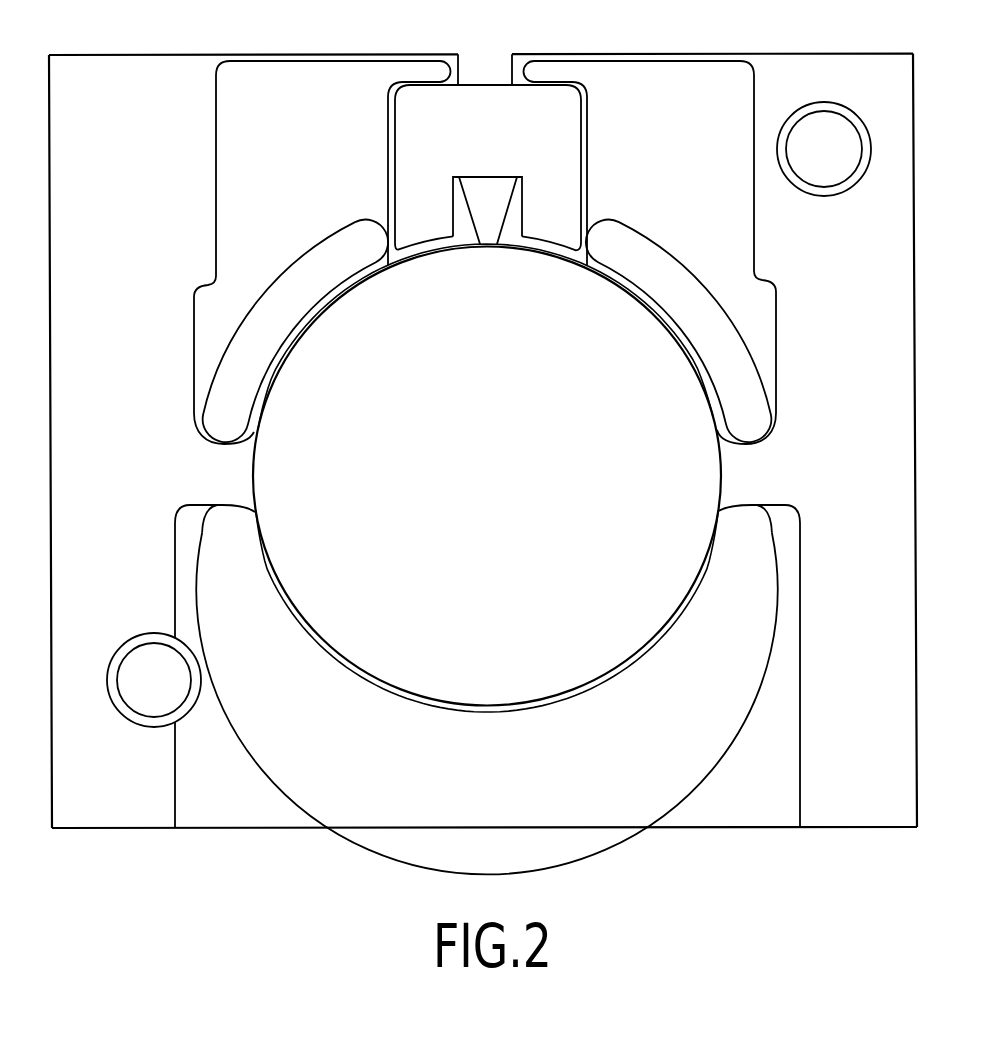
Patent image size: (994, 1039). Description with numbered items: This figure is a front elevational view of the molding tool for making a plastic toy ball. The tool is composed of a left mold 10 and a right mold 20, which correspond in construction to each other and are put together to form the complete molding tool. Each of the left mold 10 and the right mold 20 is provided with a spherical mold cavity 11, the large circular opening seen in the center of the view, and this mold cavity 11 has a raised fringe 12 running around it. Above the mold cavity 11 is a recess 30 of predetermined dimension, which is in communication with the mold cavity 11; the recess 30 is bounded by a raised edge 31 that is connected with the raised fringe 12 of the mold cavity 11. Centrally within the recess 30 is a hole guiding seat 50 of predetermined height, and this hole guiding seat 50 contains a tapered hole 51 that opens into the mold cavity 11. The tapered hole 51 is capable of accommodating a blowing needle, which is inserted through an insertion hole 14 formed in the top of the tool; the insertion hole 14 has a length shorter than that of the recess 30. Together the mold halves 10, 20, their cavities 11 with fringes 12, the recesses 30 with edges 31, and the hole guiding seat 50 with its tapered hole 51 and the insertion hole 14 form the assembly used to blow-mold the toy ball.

The left mold 10 is at (162, 66).
The right mold 20 is at (487, 439).
The spherical mold cavity 11 is at (710, 471).
The raised fringe 12 is at (678, 343).
The insertion hole 14 is at (487, 63).
The recess 30 is at (418, 110).
The raised edge 31 is at (390, 157).
The hole guiding seat 50 is at (513, 220).
The tapered hole 51 is at (495, 190).